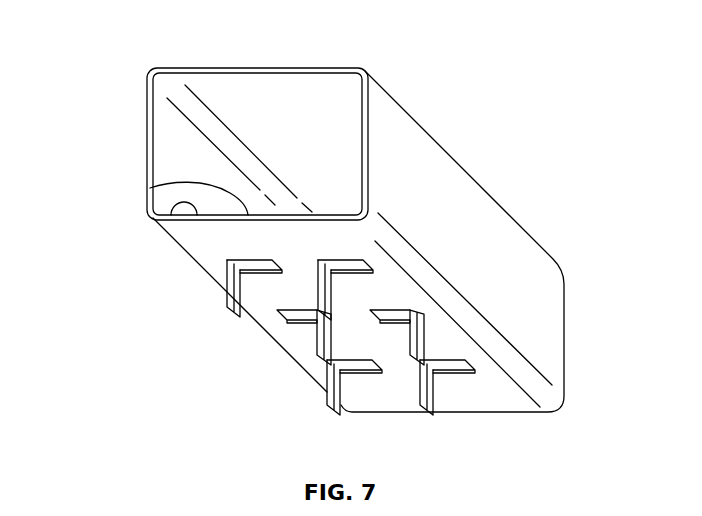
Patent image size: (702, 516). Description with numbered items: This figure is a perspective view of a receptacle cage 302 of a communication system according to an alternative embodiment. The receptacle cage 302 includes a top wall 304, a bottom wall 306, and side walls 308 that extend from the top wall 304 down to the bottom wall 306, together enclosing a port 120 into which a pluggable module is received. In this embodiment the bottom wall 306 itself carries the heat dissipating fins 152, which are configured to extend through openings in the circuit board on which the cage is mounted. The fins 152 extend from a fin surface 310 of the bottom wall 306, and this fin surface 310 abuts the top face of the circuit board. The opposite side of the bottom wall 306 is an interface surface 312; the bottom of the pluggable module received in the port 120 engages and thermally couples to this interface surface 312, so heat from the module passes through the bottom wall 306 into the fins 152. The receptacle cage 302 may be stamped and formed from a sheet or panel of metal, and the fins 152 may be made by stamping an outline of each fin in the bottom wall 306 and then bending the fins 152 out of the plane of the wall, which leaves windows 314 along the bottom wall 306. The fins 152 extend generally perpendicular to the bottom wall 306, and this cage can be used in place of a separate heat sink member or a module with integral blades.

The receptacle cage 302 is at (498, 148).
The top wall 304 is at (220, 68).
The bottom wall 306 is at (150, 188).
The side walls 308 is at (148, 127).
The fin surface 310 is at (207, 245).
The interface surface 312 is at (166, 225).
The port 120 is at (165, 113).
The heat dissipating fins 152 is at (240, 292).
The windows 314 is at (265, 272).